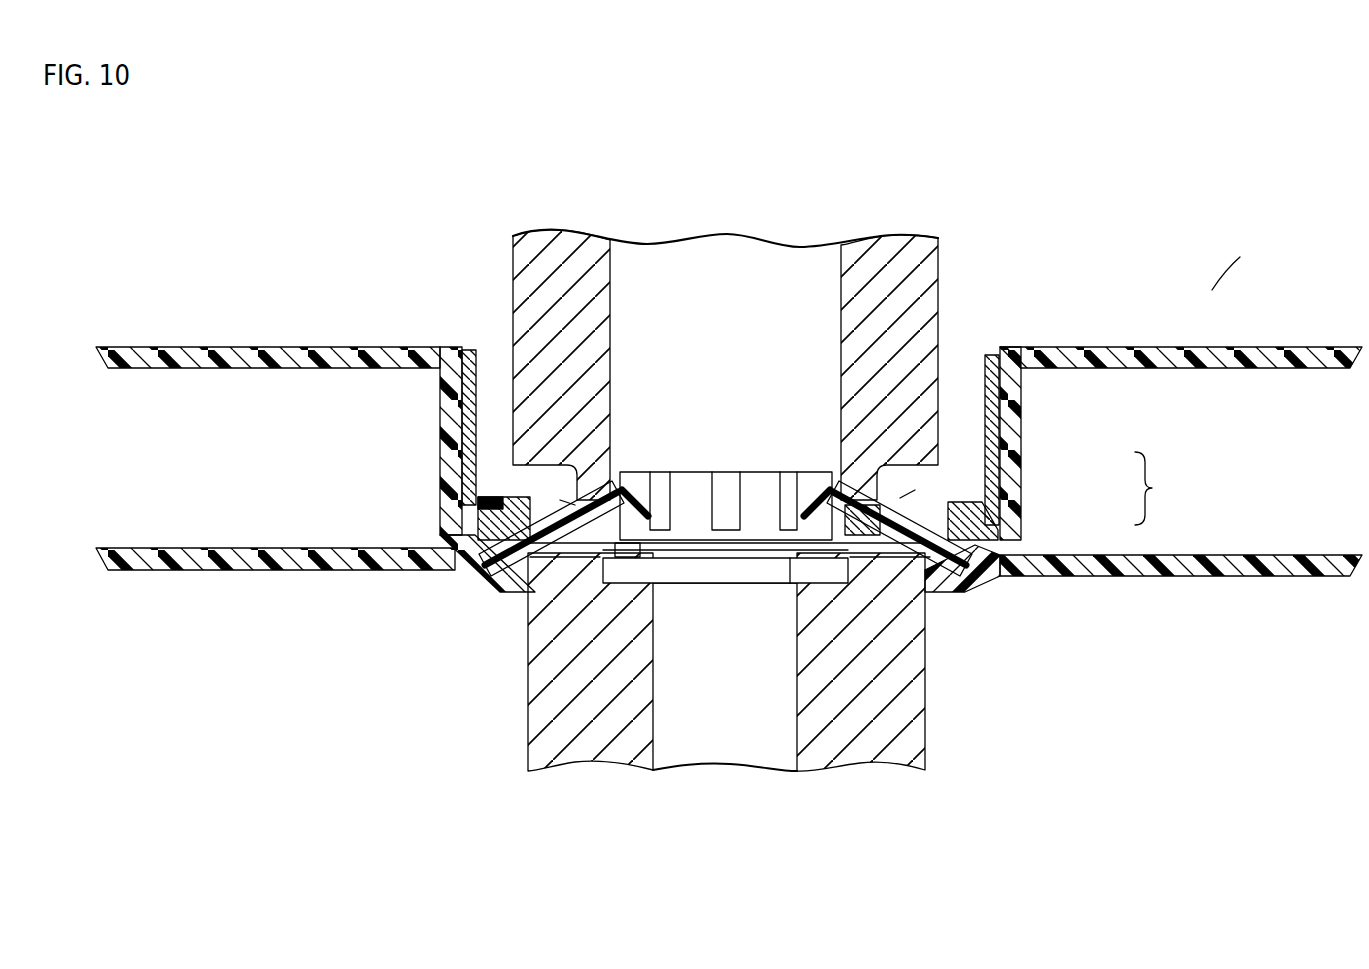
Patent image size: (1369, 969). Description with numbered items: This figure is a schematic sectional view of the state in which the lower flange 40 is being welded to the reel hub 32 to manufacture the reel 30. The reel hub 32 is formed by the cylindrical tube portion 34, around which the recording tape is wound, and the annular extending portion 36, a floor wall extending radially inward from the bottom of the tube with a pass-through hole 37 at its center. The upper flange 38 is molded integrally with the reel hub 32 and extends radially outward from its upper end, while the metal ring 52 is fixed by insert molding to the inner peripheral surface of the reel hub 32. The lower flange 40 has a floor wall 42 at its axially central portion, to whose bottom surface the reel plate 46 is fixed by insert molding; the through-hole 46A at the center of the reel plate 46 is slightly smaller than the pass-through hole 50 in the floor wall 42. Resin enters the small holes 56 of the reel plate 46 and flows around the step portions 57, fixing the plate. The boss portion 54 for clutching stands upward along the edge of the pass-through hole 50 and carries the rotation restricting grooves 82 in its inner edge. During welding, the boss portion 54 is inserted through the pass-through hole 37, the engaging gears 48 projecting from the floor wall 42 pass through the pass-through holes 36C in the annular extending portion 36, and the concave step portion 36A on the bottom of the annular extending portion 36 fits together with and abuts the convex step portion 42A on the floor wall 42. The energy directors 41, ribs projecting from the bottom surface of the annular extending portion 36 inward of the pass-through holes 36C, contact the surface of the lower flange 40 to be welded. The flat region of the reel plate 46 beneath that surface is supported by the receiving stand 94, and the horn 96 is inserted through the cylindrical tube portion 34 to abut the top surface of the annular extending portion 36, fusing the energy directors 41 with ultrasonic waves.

The reel 30 is at (1209, 292).
The reel hub 32 is at (1163, 488).
The cylindrical tube portion 34 is at (1022, 458).
The annular extending portion 36 is at (1015, 545).
The concave step portion 36A is at (460, 572).
The pass-through holes 36C is at (485, 495).
The pass-through hole 37 is at (660, 449).
The upper flange 38 is at (1197, 370).
The lower flange 40 is at (1248, 553).
The energy directors 41 is at (530, 600).
The floor wall 42 is at (475, 528).
The convex step portion 42A is at (462, 502).
The reel plate 46 is at (520, 590).
The through-hole 46A is at (660, 553).
The engaging gears 48 is at (560, 500).
The pass-through hole 50 is at (767, 553).
The metal ring 52 is at (988, 356).
The boss portion for clutching 54 is at (835, 475).
The small holes 56 is at (790, 560).
The step portions 57 is at (628, 555).
The rotation restricting grooves 82 is at (715, 503).
The receiving stand 94 is at (912, 727).
The horn 96 is at (932, 268).